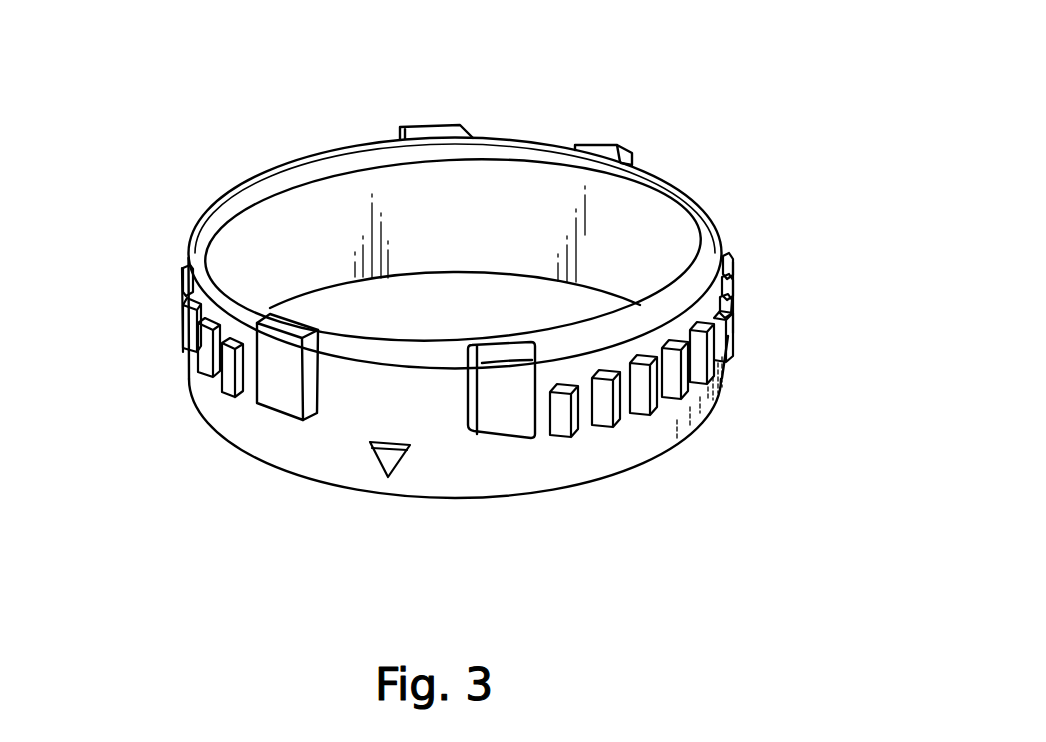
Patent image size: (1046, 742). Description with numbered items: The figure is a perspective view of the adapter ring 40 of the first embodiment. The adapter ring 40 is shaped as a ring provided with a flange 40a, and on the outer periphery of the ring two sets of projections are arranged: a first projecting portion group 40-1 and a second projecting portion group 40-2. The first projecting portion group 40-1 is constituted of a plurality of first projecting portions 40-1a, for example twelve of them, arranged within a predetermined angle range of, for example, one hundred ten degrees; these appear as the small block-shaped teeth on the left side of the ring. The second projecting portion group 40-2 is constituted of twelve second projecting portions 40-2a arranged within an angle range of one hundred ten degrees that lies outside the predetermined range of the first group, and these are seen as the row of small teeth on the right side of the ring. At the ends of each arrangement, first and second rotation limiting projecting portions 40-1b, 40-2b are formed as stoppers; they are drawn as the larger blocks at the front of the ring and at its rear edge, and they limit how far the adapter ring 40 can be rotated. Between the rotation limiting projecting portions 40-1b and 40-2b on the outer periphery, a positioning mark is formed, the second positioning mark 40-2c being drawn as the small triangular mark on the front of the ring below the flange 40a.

The adapter ring 40 is at (723, 131).
The flange 40a is at (395, 350).
The first projecting portion group 40-1 is at (152, 221).
The second projecting portion group 40-2 is at (770, 288).
The first projecting portions 40-1a is at (180, 318).
The first rotation limiting projecting portion 40-1b is at (275, 400).
The second projecting portions 40-2a is at (732, 347).
The second rotation limiting projecting portion 40-2b is at (520, 423).
The second positioning mark 40-2c is at (388, 478).